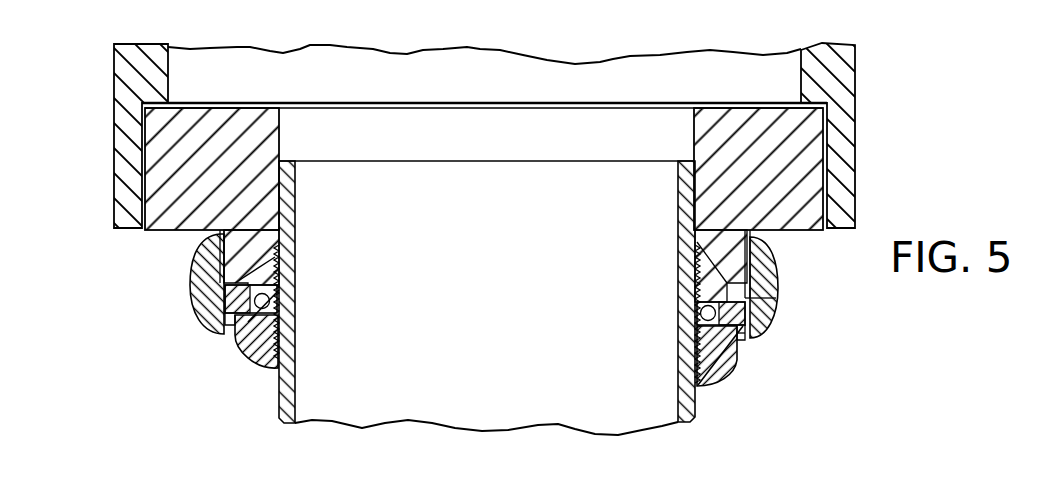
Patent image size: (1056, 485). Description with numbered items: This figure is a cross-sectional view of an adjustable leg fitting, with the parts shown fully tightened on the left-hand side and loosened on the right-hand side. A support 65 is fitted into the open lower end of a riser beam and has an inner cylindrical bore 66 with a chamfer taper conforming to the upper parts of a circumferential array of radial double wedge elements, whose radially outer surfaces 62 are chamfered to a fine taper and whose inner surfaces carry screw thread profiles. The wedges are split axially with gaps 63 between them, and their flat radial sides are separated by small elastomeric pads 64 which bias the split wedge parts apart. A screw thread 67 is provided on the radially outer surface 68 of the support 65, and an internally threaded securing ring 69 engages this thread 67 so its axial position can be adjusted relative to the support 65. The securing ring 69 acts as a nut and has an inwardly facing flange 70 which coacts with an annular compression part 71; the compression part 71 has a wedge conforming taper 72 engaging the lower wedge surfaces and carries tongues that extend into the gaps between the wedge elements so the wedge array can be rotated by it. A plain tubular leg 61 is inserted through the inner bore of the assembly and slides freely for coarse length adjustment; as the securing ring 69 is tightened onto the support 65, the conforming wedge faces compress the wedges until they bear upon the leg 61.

The support 65 is at (214, 106).
The inner cylindrical bore 66 is at (280, 126).
The radially outer surfaces 62 is at (694, 254).
The tubular leg 61 is at (660, 427).
The elastomeric pads 64 is at (280, 270).
The wedge conforming taper 72 is at (262, 280).
The screw thread 67 is at (753, 237).
The securing ring 69 is at (767, 300).
The radially outer surface 68 is at (768, 326).
The inwardly facing flange 70 is at (748, 342).
The annular compression part 71 is at (723, 383).
The gaps 63 is at (222, 308).